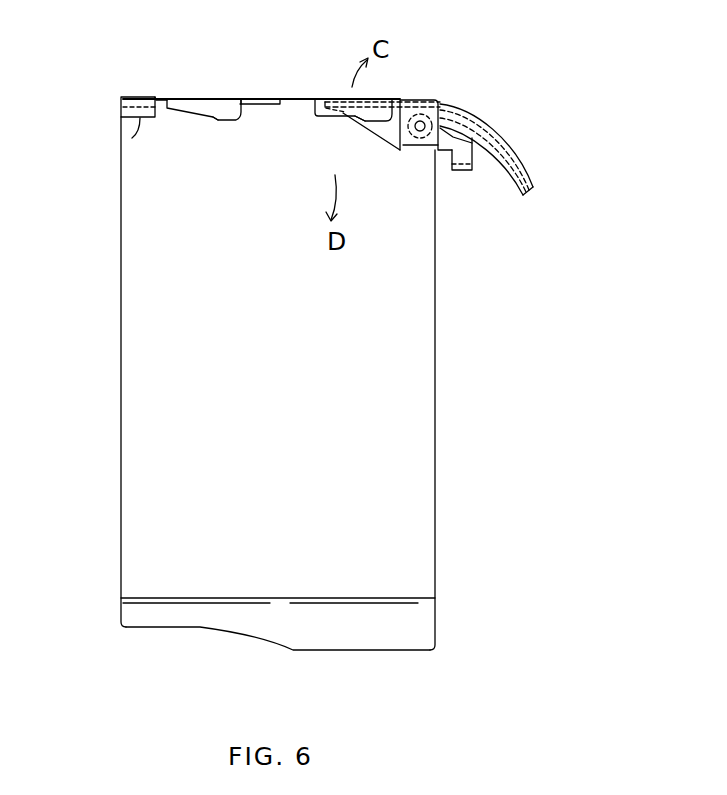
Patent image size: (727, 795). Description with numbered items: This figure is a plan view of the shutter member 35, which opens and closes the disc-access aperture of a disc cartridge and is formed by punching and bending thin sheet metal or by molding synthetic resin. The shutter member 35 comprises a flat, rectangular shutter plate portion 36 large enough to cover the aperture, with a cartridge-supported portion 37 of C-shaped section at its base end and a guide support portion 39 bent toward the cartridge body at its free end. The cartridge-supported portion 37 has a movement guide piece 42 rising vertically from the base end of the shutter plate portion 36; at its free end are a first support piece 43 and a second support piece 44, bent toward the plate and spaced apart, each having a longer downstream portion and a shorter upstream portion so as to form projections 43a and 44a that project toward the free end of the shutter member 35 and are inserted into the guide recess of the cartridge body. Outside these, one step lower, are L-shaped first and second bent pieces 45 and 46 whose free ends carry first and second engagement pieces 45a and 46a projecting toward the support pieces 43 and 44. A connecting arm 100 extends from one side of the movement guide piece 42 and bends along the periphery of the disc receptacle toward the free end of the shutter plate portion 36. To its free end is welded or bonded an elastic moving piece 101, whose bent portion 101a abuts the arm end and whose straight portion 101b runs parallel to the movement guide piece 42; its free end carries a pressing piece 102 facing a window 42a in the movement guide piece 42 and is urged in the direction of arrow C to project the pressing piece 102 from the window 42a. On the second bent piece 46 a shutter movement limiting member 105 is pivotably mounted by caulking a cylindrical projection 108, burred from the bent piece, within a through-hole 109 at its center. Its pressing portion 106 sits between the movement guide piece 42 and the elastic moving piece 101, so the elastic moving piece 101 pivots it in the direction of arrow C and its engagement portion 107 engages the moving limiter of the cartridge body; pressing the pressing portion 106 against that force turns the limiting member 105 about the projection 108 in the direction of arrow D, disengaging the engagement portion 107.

The shutter member 35 is at (422, 468).
The shutter plate portion 36 is at (130, 418).
The cartridge-supported portion 37 is at (182, 96).
The guide support portion 39 is at (420, 628).
The movement guide piece 42 is at (272, 97).
The window 42a is at (282, 106).
The first support piece 43 is at (218, 110).
The projection 43a is at (225, 120).
The second support piece 44 is at (347, 129).
The projection 44a is at (377, 118).
The first bent piece 45 is at (140, 105).
The first engagement piece 45a is at (132, 138).
The second bent piece 46 is at (422, 152).
The second engagement piece 46a is at (428, 168).
The connecting arm 100 is at (517, 150).
The elastic moving piece 101 is at (500, 183).
The bent portion 101a is at (533, 192).
The straight portion 101b is at (398, 103).
The pressing piece 102 is at (343, 98).
The shutter movement limiting member 105 is at (455, 138).
The pressing portion 106 is at (335, 98).
The engagement portion 107 is at (470, 175).
The cylindrical projection 108 is at (388, 143).
The through-hole 109 is at (433, 157).